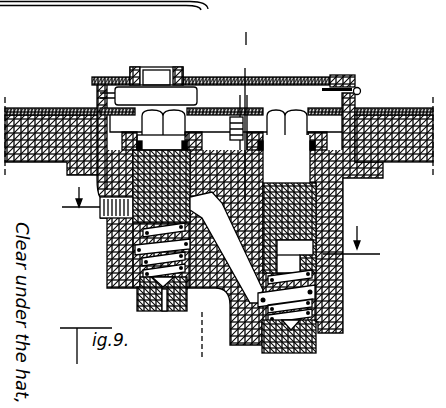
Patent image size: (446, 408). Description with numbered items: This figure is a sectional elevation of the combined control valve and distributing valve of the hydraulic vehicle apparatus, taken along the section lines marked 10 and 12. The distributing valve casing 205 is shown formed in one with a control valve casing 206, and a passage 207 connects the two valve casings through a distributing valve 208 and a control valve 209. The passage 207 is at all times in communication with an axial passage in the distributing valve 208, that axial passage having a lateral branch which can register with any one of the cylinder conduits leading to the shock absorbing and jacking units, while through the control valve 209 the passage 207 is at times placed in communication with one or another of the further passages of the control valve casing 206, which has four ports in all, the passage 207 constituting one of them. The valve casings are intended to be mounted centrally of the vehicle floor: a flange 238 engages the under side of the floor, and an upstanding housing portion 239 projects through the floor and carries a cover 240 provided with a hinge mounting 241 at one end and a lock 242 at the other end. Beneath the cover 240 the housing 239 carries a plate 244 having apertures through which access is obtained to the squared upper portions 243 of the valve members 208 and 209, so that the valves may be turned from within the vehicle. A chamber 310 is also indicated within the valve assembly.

The section line 10- 10 is at (224, 198).
The section line 12- 12 is at (218, 223).
The distributing valve casing 205 is at (344, 208).
The control valve casing 206 is at (107, 224).
The passage 207 is at (209, 287).
The distributing valve 208 is at (315, 331).
The control valve 209 is at (138, 291).
The flange 238 is at (366, 180).
The housing portion 239 is at (360, 100).
The cover 240 is at (265, 79).
The hinge mounting 241 is at (358, 88).
The lock 242 is at (132, 80).
The squared upper portions 243 is at (180, 93).
The plate 244 is at (227, 112).
The chamber 310 is at (322, 272).